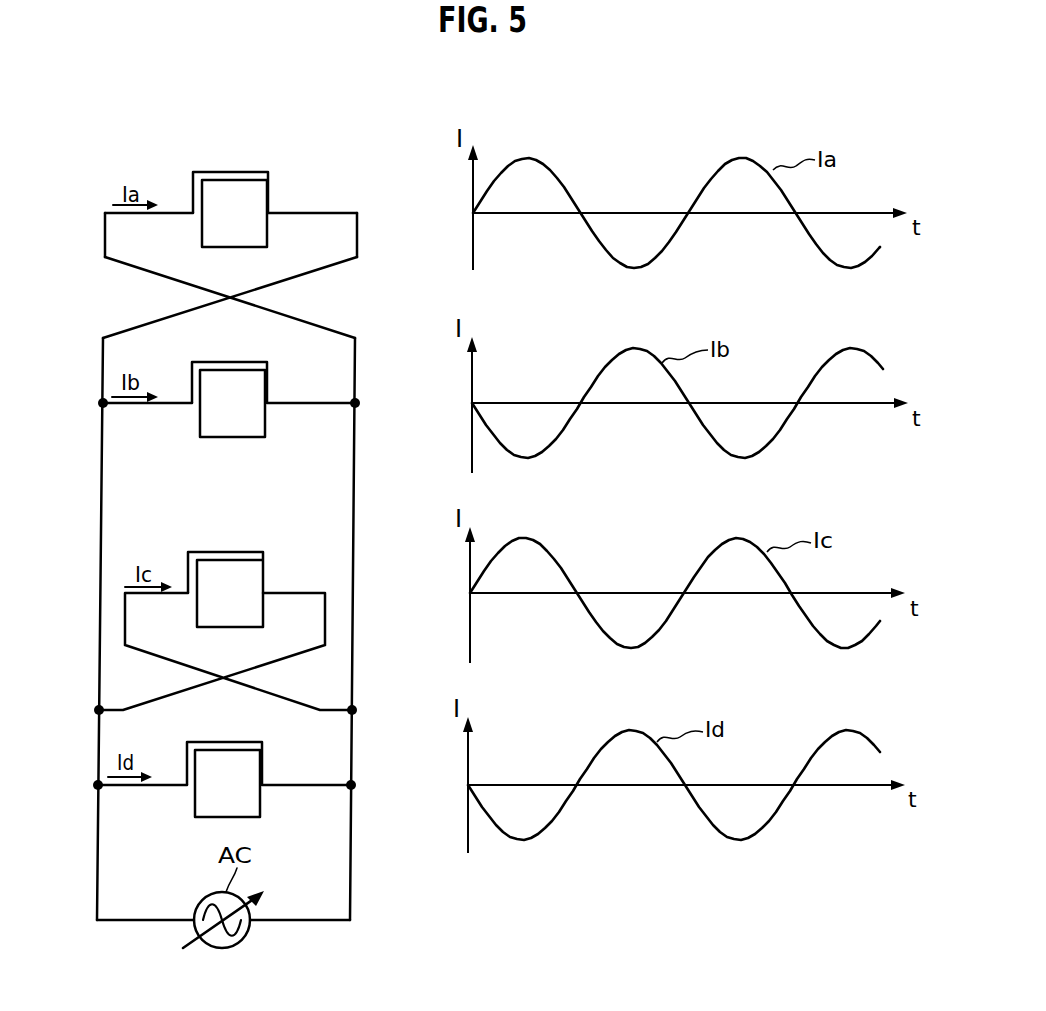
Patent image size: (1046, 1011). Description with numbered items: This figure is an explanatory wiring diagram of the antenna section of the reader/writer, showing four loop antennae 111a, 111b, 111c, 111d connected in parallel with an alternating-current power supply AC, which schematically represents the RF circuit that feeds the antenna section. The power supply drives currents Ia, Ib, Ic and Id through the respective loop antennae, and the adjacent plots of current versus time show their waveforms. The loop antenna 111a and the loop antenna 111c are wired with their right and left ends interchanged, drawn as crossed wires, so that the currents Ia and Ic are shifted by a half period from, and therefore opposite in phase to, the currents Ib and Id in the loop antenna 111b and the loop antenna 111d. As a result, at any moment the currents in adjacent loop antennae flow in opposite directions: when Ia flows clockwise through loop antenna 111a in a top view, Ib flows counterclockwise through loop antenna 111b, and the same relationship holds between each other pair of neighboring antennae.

The loop antenna 111a is at (233, 172).
The loop antenna 111b is at (230, 362).
The loop antenna 111c is at (228, 552).
The loop antenna 111d is at (225, 742).